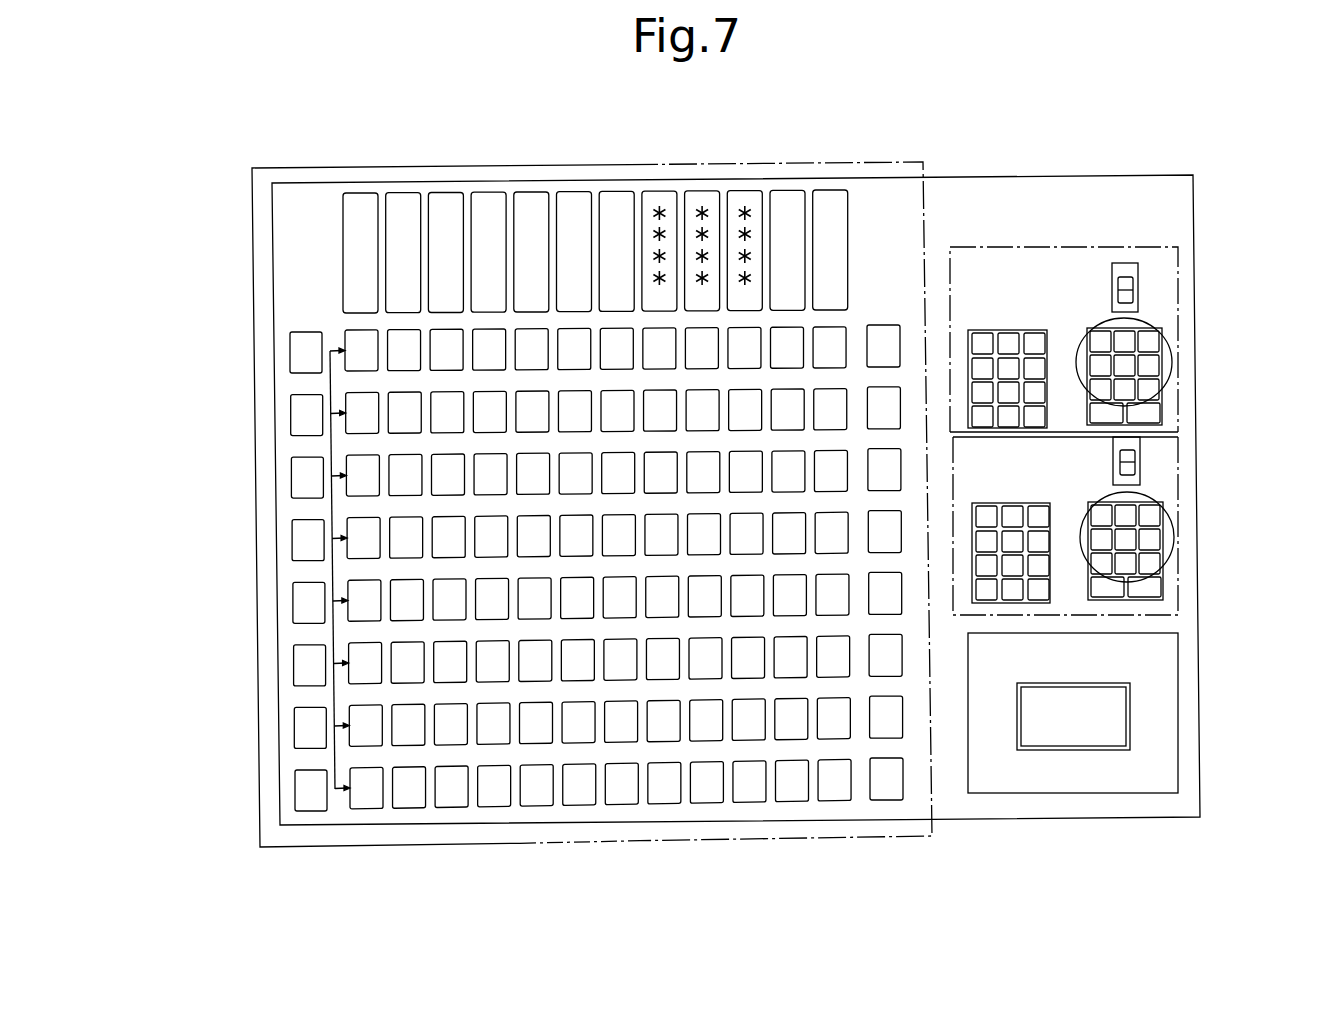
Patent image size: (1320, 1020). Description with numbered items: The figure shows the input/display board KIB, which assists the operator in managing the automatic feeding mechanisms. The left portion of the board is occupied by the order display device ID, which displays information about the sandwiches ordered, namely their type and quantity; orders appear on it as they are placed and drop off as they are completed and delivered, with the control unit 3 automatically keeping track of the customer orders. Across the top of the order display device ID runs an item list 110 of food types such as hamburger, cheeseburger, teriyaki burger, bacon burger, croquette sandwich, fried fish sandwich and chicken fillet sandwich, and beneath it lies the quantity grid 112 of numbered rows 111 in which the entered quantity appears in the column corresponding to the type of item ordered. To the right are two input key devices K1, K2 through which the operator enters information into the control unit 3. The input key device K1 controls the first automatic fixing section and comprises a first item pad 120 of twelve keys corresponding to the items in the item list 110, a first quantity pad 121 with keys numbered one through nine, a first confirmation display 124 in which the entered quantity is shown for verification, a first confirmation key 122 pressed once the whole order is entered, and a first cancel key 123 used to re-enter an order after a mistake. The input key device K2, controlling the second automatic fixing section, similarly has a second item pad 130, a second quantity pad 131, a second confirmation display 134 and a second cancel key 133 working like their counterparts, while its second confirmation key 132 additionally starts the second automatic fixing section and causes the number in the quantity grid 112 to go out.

The order display device ID is at (520, 168).
The input/display board KIB is at (957, 817).
The item list 110 is at (328, 258).
The row number keys 111 is at (890, 150).
The quantity grid 112 is at (331, 510).
The first item pad 120 is at (1000, 325).
The first quantity pad 121 is at (1142, 320).
The first confirmation key 122 is at (1180, 429).
The first cancel key 123 is at (1150, 413).
The first confirmation display 124 is at (1125, 262).
The second item pad 130 is at (1037, 590).
The second quantity pad 131 is at (1174, 538).
The second confirmation key 132 is at (1183, 610).
The second cancel key 133 is at (1150, 590).
The second confirmation display 134 is at (1127, 470).
The control unit 3 is at (1163, 772).
The input key device K1 is at (1180, 347).
The input key device K2 is at (1180, 462).